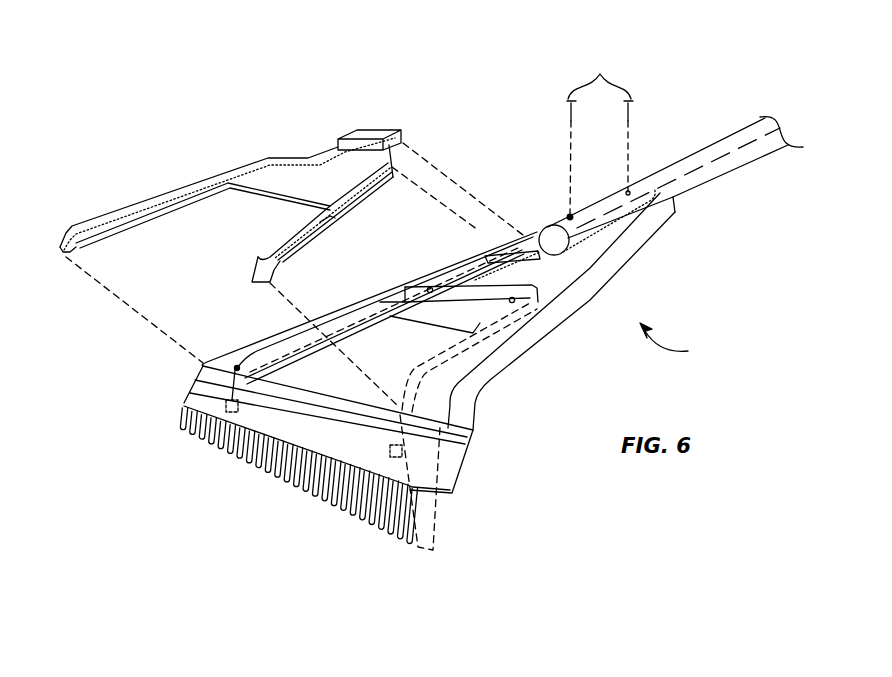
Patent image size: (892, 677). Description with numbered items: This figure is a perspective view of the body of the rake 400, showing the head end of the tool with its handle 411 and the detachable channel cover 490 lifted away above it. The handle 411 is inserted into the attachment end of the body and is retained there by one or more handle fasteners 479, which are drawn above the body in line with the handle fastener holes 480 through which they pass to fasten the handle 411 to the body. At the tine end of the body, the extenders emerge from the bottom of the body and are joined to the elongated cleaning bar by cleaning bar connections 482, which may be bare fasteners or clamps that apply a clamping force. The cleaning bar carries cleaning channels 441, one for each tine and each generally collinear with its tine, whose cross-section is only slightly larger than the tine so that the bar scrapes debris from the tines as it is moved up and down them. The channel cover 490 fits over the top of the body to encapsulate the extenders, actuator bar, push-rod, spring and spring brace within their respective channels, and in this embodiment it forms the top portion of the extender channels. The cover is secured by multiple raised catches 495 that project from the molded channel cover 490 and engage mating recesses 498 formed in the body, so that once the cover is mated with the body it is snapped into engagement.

The rake 400 is at (687, 347).
The handle 411 is at (717, 168).
The cleaning channels 441 is at (433, 460).
The handle fasteners 479 is at (600, 133).
The handle fastener holes 480 is at (569, 214).
The cleaning bar connections 482 is at (227, 407).
The channel cover 490 is at (271, 173).
The raised catches 495 is at (401, 134).
The mating recesses 498 is at (497, 252).